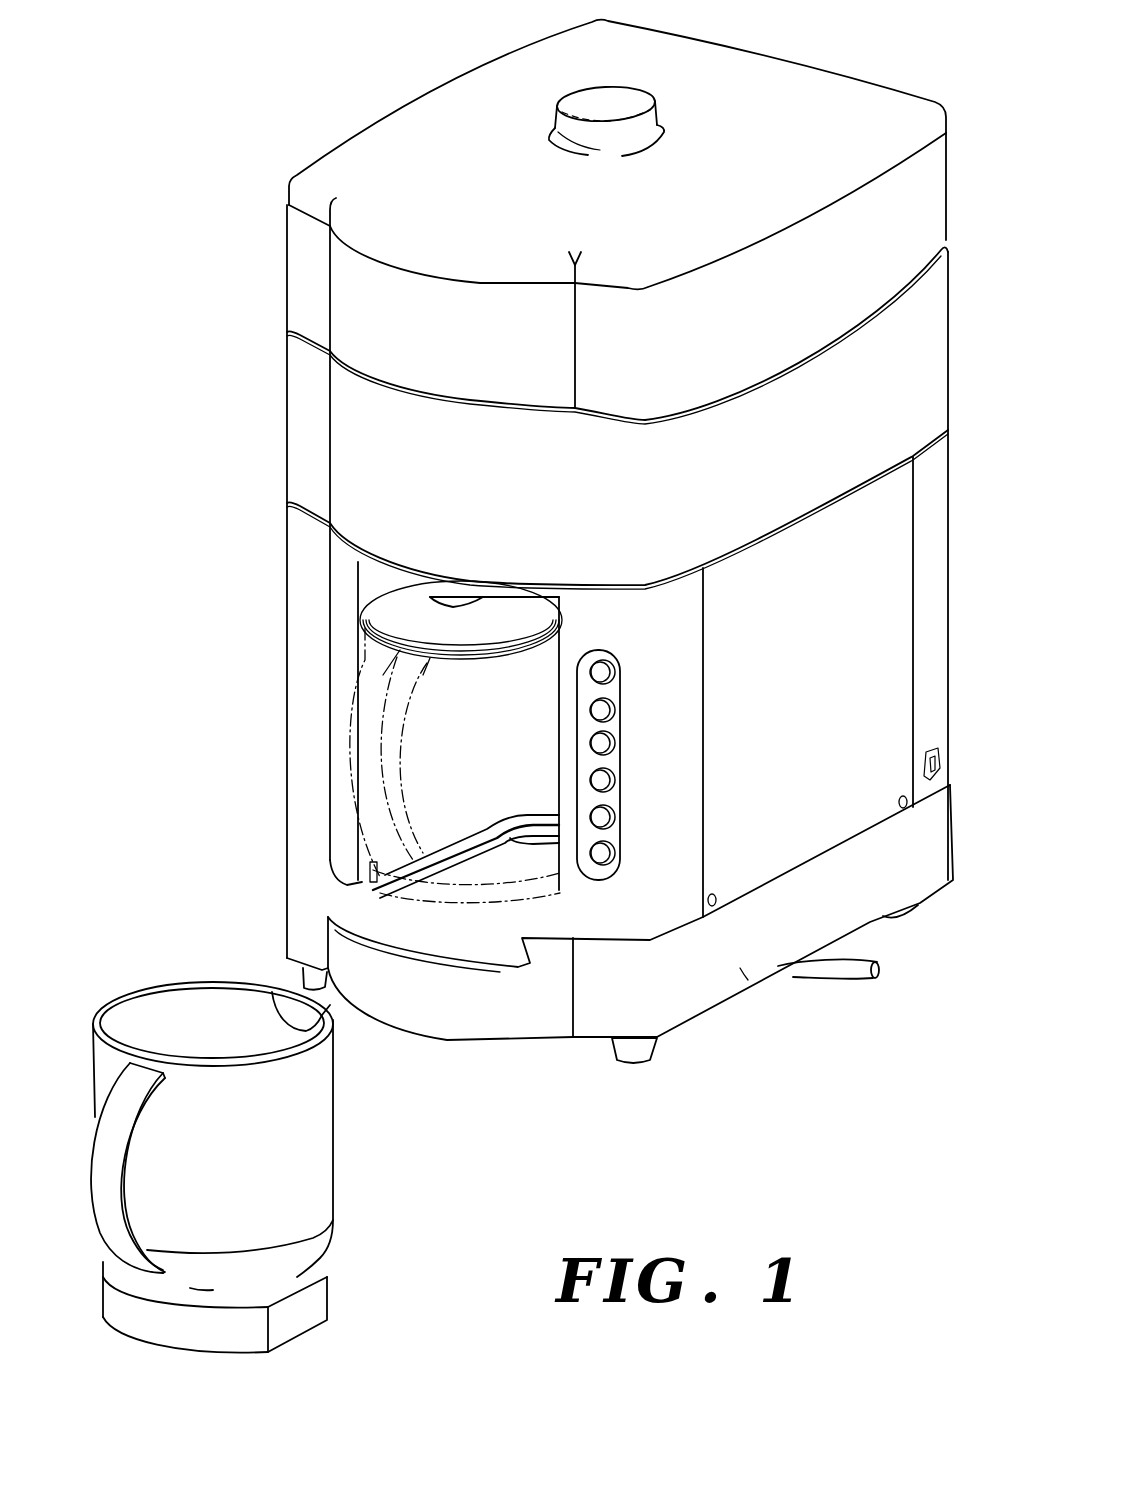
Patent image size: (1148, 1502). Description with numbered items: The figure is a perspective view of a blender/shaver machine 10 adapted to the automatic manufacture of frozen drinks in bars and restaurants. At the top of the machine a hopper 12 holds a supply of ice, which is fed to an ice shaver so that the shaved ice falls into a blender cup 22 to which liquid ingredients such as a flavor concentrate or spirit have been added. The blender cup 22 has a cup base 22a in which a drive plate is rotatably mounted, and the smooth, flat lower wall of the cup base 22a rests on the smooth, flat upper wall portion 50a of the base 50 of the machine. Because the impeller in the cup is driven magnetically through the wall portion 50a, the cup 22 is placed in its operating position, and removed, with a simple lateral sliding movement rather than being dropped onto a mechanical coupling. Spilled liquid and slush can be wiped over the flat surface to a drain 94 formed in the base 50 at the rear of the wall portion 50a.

The blender/shaver machine 10 is at (569, 541).
The hopper 12 is at (290, 262).
The blender cup 22 is at (423, 931).
The cup base 22a is at (336, 1312).
The base 50 is at (740, 970).
The flat upper wall portion of the base 50a is at (510, 878).
The drain 94 is at (537, 837).